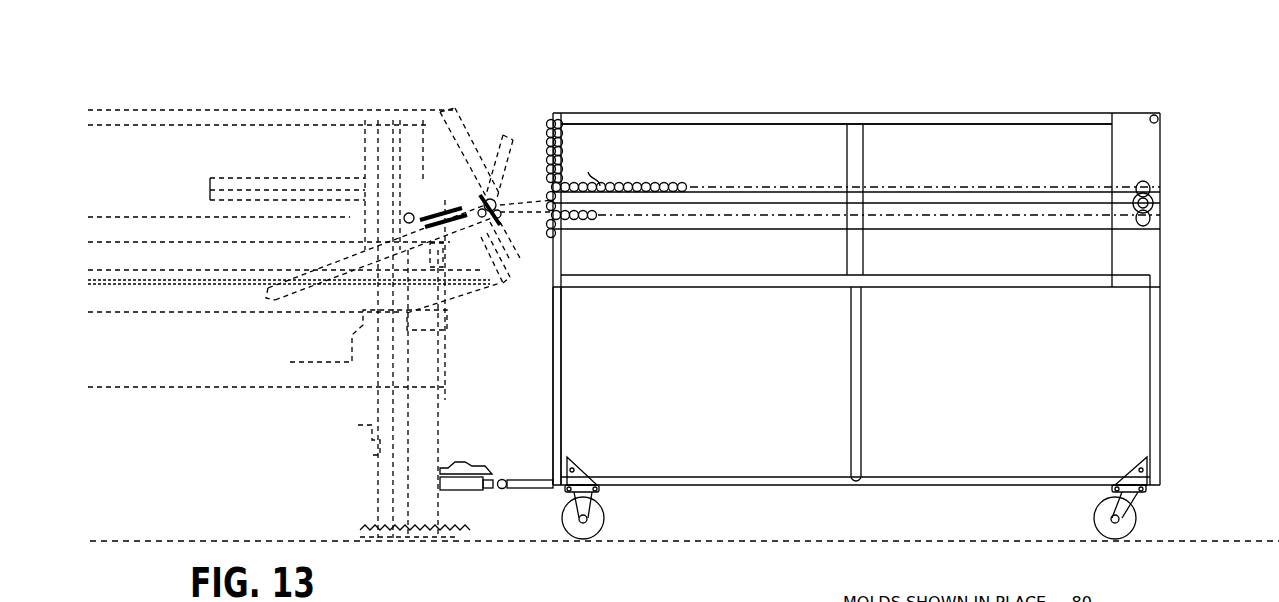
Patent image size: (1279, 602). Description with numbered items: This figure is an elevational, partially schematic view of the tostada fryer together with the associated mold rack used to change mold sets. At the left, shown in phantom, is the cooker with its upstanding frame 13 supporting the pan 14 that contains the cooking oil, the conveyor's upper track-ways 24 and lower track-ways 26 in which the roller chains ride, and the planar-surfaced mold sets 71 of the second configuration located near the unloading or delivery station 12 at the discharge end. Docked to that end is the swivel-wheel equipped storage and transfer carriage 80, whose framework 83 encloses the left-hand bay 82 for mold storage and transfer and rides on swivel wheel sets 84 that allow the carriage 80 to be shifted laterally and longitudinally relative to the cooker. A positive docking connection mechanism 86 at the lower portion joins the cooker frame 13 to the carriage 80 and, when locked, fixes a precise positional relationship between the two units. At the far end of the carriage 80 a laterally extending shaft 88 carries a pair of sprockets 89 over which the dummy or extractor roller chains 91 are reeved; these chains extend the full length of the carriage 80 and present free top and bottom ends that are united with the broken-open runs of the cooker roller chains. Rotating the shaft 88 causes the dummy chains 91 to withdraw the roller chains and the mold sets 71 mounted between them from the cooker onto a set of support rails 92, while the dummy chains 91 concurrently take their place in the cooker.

The tostada unloading or delivery station 12 is at (483, 122).
The upstanding frame 13 is at (378, 497).
The pan 14 is at (469, 297).
The upper track-ways 24 is at (232, 178).
The lower track-ways 26 is at (288, 296).
The mold sets 71 is at (505, 140).
The storage and transfer carriage 80 is at (892, 113).
The left-hand bay 82 is at (678, 138).
The framework 83 is at (560, 421).
The swivel wheel sets 84 is at (606, 512).
The positive docking connection mechanism 86 is at (528, 473).
The laterally extending shaft 88 is at (1152, 216).
The sprockets 89 is at (1150, 188).
The dummy or extractor roller chains 91 is at (684, 183).
The support rails 92 is at (788, 222).